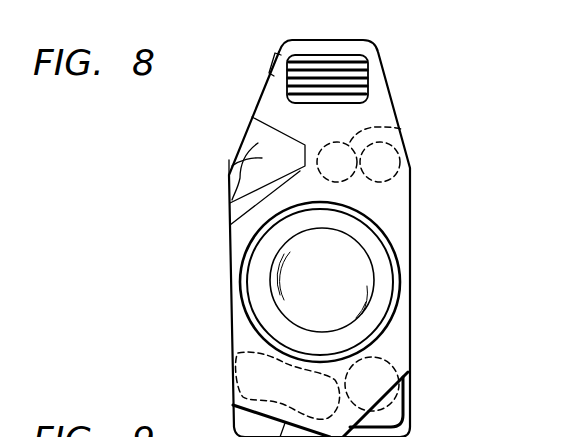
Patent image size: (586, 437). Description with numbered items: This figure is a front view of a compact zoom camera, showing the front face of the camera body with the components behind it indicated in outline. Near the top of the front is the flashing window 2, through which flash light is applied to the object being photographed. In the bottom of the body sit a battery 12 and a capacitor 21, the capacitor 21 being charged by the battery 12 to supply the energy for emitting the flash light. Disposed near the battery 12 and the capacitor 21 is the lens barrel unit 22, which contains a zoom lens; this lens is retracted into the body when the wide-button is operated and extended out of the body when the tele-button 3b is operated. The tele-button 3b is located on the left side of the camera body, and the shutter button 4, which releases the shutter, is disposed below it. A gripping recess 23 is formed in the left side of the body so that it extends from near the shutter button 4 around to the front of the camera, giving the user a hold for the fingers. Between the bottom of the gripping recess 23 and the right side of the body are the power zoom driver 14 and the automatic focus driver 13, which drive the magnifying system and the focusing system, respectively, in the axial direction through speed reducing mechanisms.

The flashing window 2 is at (337, 70).
The tele-button 3b is at (270, 64).
The shutter button 4 is at (230, 168).
The battery 12 is at (243, 378).
The automatic focus driver 13 is at (395, 158).
The power zoom driver 14 is at (393, 132).
The capacitor 21 is at (400, 364).
The lens barrel unit 22 is at (358, 262).
The gripping recess 23 is at (258, 144).